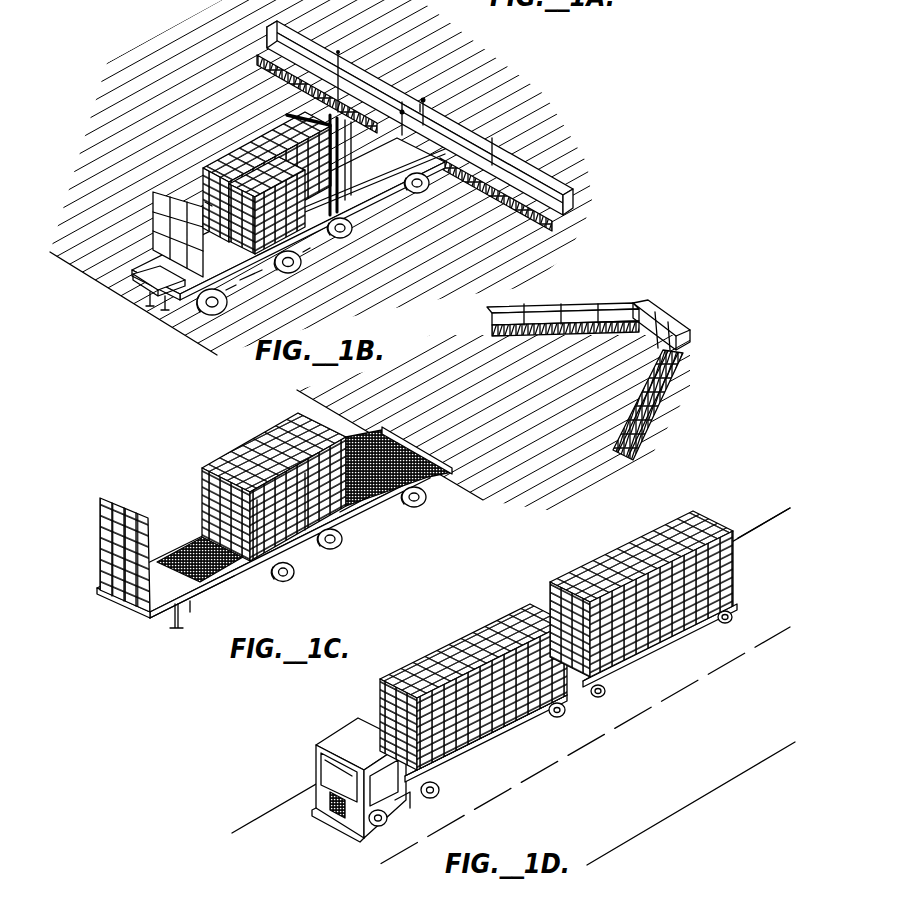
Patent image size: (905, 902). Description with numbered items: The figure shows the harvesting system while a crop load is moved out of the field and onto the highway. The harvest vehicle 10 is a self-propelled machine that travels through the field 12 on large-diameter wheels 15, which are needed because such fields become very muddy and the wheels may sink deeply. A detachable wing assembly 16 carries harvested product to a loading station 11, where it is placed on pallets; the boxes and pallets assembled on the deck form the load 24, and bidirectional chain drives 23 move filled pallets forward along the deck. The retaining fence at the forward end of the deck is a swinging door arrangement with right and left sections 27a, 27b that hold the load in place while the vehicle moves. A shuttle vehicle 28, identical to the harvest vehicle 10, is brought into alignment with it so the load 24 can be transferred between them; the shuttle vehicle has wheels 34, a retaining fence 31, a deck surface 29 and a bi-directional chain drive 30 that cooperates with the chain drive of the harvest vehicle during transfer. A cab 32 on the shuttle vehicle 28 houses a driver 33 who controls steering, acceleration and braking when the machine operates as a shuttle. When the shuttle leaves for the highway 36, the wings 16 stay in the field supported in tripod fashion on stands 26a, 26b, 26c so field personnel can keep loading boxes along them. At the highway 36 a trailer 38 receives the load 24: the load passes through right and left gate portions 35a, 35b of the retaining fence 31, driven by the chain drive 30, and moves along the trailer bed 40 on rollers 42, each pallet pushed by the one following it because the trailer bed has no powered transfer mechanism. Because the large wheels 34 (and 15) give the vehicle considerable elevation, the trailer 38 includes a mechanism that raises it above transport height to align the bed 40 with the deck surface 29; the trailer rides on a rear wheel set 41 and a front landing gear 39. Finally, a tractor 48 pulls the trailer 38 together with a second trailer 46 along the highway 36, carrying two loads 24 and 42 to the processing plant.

In FIG. 1B, the vehicle 10 is at (374, 203).
In FIG. 1B, the loading station 11 is at (427, 168).
In FIG. 1B, the field 12 is at (150, 26).
In FIG. 1C, the field 12 is at (523, 478).
In FIG. 1B, the wheels 15 is at (412, 192).
In FIG. 1B, the wing assembly 16 is at (448, 120).
In FIG. 1C, the wing assembly 16 is at (596, 375).
In FIG. 1B, the bidirectional chain drives 23 is at (402, 102).
In FIG. 1B, the load 24 is at (243, 165).
In FIG. 1C, the load 24 is at (264, 501).
In FIG. 1D, the load 24 is at (607, 555).
In FIG. 1C, the stand 26a is at (560, 352).
In FIG. 1C, the stand 26b is at (634, 430).
In FIG. 1C, the stand 26c is at (652, 358).
In FIG. 1B, the right section 27a is at (303, 252).
In FIG. 1B, the left section 27b is at (287, 114).
In FIG. 1B, the shuttle vehicle 28 is at (250, 278).
In FIG. 1C, the shuttle vehicle 28 is at (366, 507).
In FIG. 1B, the deck surface 29 is at (231, 293).
In FIG. 1C, the deck surface 29 is at (372, 437).
In FIG. 1B, the bi-directional chain drive 30 is at (205, 202).
In FIG. 1C, the bi-directional chain drive 30 is at (440, 470).
In FIG. 1B, the retaining fence 31 is at (150, 200).
In FIG. 1B, the cab 32 is at (138, 290).
In FIG. 1B, the driver 33 is at (160, 305).
In FIG. 1B, the wheels 34 is at (291, 276).
In FIG. 1C, the wheels 34 is at (324, 550).
In FIG. 1C, the right gate portion 35a is at (302, 556).
In FIG. 1C, the left gate portion 35b is at (265, 434).
In FIG. 1C, the highway 36 is at (421, 528).
In FIG. 1D, the highway 36 is at (757, 532).
In FIG. 1C, the trailer 38 is at (234, 578).
In FIG. 1D, the trailer 38 is at (632, 660).
In FIG. 1C, the front landing gear 39 is at (186, 620).
In FIG. 1C, the trailer bed 40 is at (132, 612).
In FIG. 1C, the rear wheel set 41 is at (286, 583).
In FIG. 1C, the rollers 42 is at (196, 540).
In FIG. 1D, the rollers 42 is at (425, 668).
In FIG. 1D, the trailer 46 is at (481, 745).
In FIG. 1D, the tractor 48 is at (340, 727).